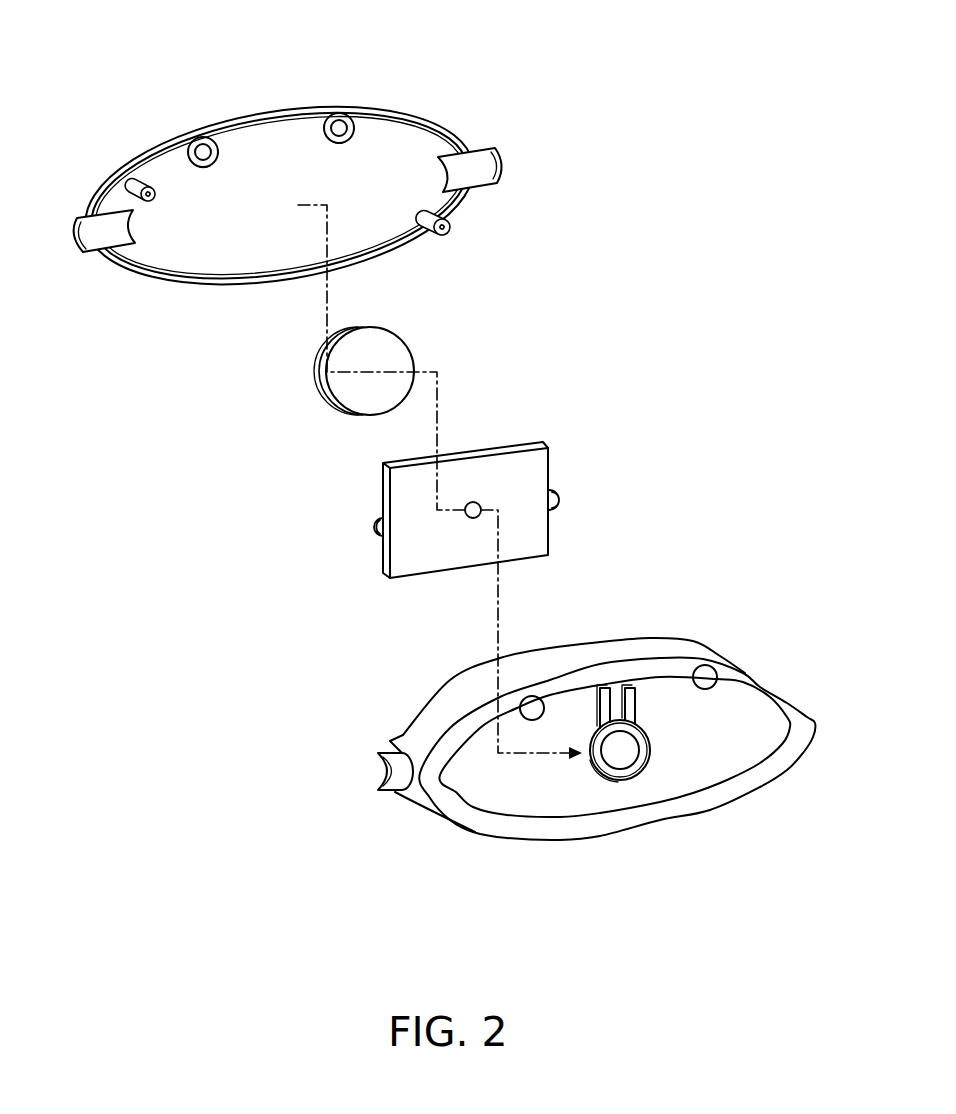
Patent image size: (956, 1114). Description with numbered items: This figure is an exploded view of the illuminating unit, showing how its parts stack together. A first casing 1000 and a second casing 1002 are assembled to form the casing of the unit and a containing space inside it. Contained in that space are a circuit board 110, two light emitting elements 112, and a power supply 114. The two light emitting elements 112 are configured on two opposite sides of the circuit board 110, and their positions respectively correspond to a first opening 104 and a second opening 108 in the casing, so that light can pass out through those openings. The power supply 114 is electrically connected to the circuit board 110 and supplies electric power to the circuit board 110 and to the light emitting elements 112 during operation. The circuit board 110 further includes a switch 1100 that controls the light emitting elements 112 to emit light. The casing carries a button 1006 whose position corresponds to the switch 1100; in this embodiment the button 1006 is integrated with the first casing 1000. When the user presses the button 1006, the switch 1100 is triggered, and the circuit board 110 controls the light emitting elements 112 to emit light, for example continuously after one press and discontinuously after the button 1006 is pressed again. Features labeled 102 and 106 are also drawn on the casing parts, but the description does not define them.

The positioning pin 102 is at (338, 116).
The first opening 104 is at (489, 175).
The positioning pin 106 is at (205, 147).
The second opening 108 is at (85, 254).
The circuit board 110 is at (544, 438).
The light emitting element 112 is at (372, 524).
The power supply 114 is at (411, 347).
The first casing 1000 is at (512, 842).
The second casing 1002 is at (378, 106).
The button 1006 is at (633, 778).
The switch 1100 is at (473, 500).